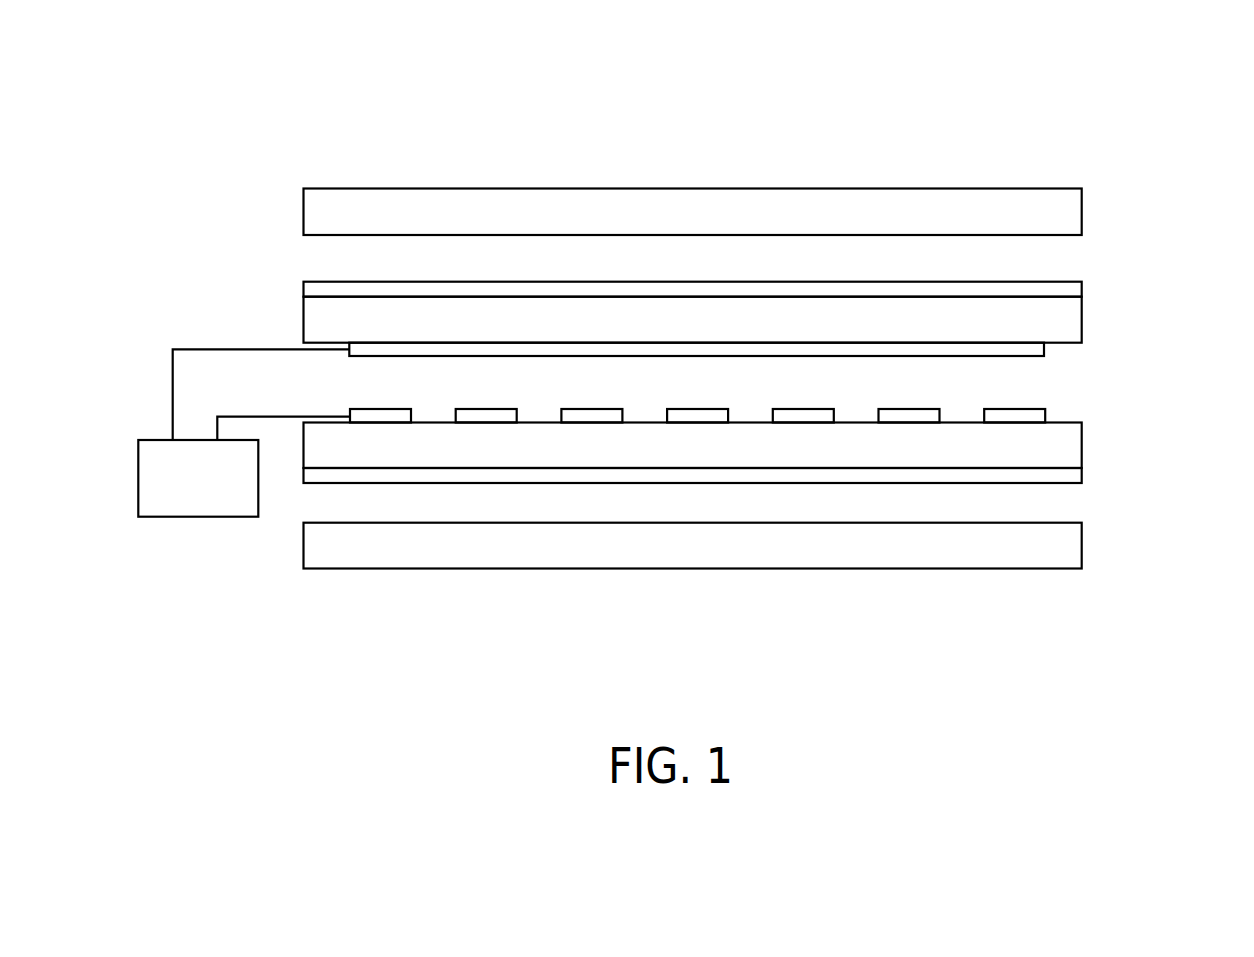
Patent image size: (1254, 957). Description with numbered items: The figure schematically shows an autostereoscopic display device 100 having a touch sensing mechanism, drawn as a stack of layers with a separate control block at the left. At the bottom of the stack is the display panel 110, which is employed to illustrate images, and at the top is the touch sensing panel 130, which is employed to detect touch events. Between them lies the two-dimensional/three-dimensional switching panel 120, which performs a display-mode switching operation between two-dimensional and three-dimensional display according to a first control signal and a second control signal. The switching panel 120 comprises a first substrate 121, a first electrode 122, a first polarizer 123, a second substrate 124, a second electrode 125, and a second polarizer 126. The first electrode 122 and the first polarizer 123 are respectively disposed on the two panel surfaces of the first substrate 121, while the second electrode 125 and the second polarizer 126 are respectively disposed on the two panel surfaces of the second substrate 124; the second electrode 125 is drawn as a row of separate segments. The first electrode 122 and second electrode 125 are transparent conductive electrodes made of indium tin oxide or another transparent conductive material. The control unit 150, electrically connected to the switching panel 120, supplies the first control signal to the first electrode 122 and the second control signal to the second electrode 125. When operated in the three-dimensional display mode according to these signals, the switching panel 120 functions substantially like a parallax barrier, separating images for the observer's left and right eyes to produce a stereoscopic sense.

The autostereoscopic display device 100 is at (1023, 85).
The display panel 110 is at (1082, 543).
The 2D/3D switching panel 120 is at (773, 380).
The first substrate 121 is at (1082, 320).
The first electrode 122 is at (1044, 353).
The first polarizer 123 is at (1082, 287).
The second substrate 124 is at (1082, 443).
The second electrode 125 is at (1045, 413).
The second polarizer 126 is at (731, 474).
The touch sensing panel 130 is at (1082, 211).
The control unit 150 is at (220, 493).